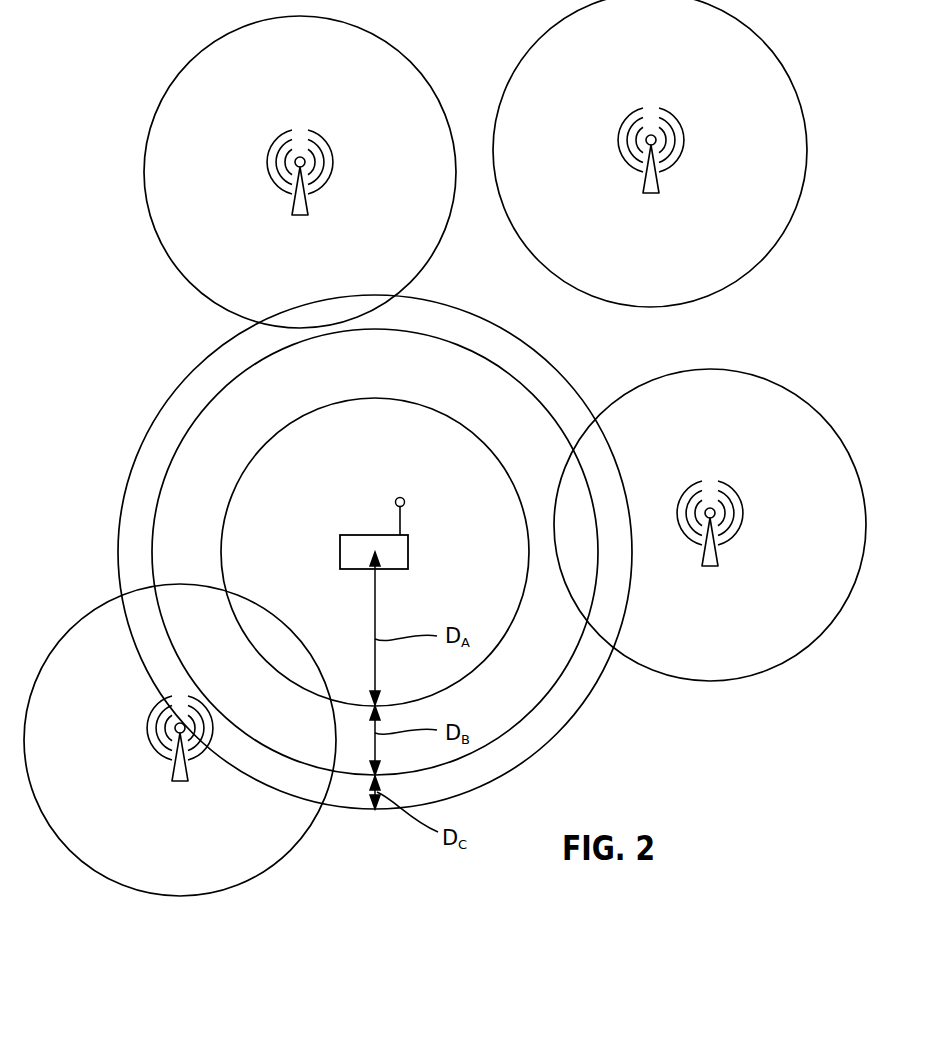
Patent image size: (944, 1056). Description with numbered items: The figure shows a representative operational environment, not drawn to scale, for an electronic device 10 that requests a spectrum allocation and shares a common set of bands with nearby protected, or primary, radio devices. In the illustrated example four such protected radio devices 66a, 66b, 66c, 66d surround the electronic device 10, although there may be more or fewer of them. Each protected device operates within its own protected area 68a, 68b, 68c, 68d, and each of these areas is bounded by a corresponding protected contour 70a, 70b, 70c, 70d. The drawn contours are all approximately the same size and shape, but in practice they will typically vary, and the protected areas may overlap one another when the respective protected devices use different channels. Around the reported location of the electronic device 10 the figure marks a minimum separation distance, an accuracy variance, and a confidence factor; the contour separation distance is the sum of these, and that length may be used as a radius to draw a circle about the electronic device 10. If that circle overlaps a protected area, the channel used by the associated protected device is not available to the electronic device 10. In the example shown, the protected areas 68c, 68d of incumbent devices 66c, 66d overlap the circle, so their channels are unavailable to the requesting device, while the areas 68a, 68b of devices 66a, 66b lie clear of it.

The electronic device 10 is at (408, 555).
The protected radio device 66a is at (654, 187).
The protected radio device 66b is at (304, 207).
The protected radio device 66c is at (713, 560).
The protected radio device 66d is at (176, 777).
The protected area 68a is at (650, 177).
The protected area 68b is at (335, 172).
The protected area 68c is at (710, 554).
The protected area 68d is at (193, 750).
The protected contour 70a is at (700, 301).
The protected contour 70b is at (442, 246).
The protected contour 70c is at (713, 682).
The protected contour 70d is at (278, 860).